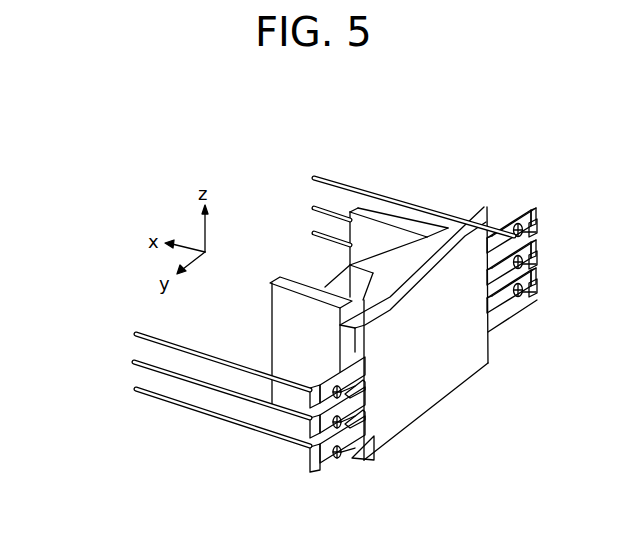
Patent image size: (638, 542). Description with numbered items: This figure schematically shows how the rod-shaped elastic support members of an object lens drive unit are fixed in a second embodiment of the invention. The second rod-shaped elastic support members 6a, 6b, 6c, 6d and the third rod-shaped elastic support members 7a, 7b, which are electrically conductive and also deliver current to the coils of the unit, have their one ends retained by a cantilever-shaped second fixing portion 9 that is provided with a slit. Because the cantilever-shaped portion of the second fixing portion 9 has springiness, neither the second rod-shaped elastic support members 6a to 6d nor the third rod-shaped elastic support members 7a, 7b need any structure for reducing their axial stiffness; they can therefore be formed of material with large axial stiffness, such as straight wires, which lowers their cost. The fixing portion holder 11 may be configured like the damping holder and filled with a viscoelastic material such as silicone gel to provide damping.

The second rod-shaped elastic support member 6a is at (210, 358).
The second rod-shaped elastic support member 6b is at (187, 410).
The second rod-shaped elastic support member 6c is at (385, 197).
The second rod-shaped elastic support member 6d is at (340, 236).
The third rod-shaped elastic support member 7a is at (137, 361).
The third rod-shaped elastic support member 7b is at (315, 207).
The second fixing portion 9 is at (435, 368).
The fixing portion holder 11 is at (408, 263).